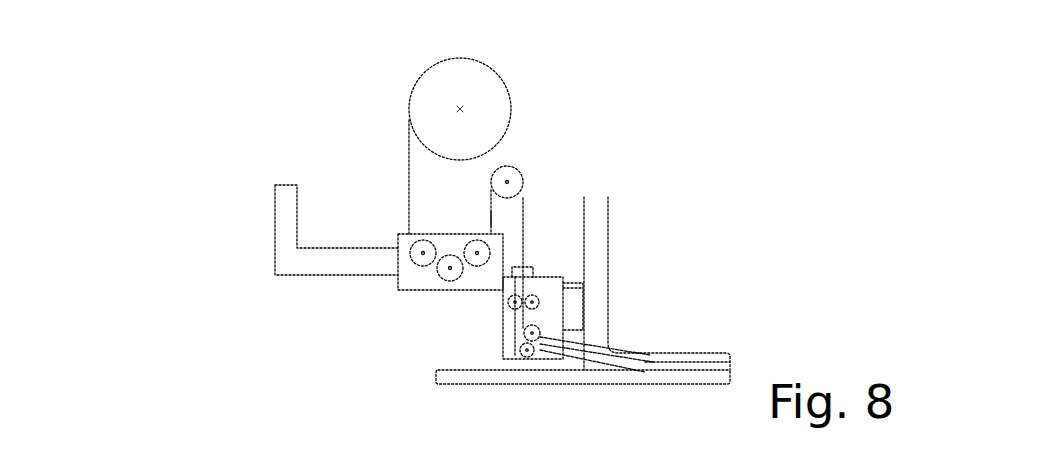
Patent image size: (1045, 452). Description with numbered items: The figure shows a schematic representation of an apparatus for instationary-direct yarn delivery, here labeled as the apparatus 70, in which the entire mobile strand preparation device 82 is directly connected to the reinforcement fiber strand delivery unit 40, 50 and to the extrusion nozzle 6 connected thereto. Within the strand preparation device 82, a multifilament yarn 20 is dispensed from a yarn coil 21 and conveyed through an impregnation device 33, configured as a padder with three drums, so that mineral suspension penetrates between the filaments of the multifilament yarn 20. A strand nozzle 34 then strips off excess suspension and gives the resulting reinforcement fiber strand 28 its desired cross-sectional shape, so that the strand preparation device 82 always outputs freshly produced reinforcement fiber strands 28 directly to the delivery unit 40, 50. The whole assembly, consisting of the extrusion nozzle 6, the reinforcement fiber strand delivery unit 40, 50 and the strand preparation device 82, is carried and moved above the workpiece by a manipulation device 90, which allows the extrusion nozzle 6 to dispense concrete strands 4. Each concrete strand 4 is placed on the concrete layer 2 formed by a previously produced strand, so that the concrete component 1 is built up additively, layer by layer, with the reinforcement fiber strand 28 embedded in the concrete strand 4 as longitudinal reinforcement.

The apparatus for stationary-indirect yarn delivery 70 is at (520, 201).
The strand preparation device 82 is at (417, 178).
The multifilament yarn 20 is at (393, 212).
The yarn coil 21 is at (490, 102).
The reinforcement fiber strand 28 is at (531, 151).
The strand nozzle 34 is at (459, 202).
The impregnation device 33 is at (399, 285).
The manipulation device 90 is at (301, 229).
The reinforcement fiber strand delivery unit 40 is at (477, 313).
The reinforcement fiber strand delivery unit 50 is at (543, 313).
The extrusion nozzle 6 is at (604, 324).
The concrete strand 4 is at (673, 250).
The concrete component 1 is at (703, 328).
The concrete layer 2 is at (538, 361).